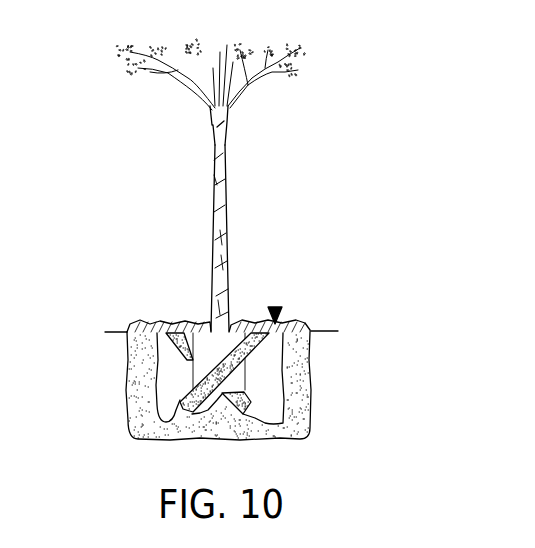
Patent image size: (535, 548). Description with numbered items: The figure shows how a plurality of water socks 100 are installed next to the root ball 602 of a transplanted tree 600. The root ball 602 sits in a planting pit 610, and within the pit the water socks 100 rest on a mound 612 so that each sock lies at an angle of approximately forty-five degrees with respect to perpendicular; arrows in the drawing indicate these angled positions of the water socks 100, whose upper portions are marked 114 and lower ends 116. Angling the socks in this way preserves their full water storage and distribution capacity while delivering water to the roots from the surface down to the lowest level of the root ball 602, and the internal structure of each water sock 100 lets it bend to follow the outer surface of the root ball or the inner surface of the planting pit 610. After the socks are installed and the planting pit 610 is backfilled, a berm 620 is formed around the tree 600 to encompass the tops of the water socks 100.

The transplanted tree 600 is at (260, 152).
The root ball 602 is at (190, 331).
The planting pit 610 is at (275, 306).
The mound 612 is at (251, 398).
The berm 620 is at (133, 327).
The water sock 100 is at (170, 372).
The stake upper portion 114 is at (182, 331).
The stake lower end 116 is at (179, 407).